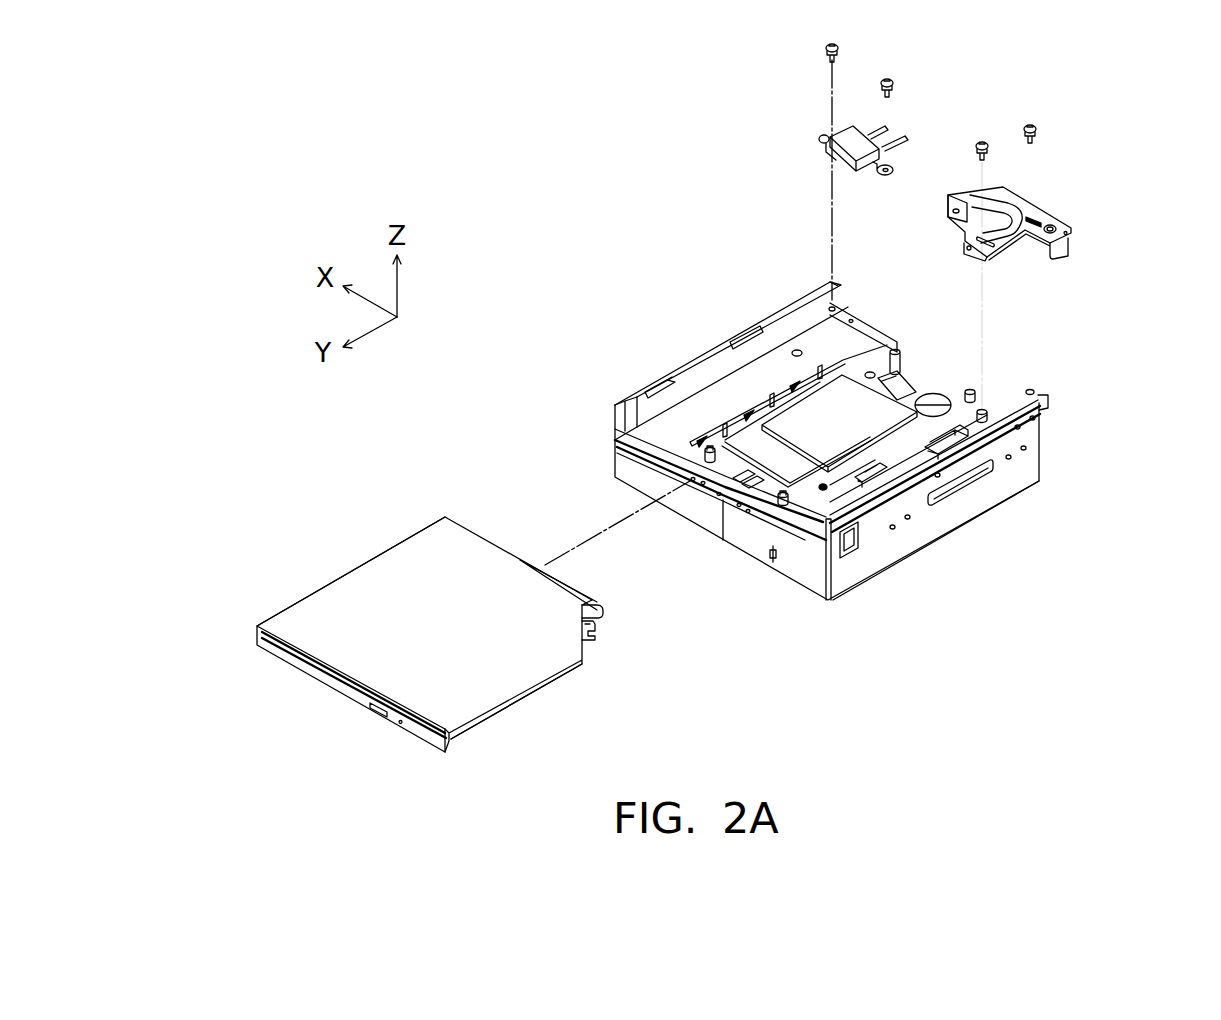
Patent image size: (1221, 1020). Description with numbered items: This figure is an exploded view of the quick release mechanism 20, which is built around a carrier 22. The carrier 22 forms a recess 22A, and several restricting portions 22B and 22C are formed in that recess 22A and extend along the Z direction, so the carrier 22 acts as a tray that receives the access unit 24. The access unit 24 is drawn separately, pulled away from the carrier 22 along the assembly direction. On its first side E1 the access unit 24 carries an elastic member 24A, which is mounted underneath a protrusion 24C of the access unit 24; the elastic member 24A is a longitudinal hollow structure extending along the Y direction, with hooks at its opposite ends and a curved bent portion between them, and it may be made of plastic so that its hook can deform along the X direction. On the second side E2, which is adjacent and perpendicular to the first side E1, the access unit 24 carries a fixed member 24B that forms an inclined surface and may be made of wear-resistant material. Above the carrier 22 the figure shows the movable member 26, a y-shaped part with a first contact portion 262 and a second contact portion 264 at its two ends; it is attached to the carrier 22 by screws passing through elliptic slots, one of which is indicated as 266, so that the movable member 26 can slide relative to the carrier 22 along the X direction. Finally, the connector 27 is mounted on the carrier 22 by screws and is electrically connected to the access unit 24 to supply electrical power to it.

The quick release mechanism 20 is at (358, 97).
The carrier 22 is at (646, 375).
The recess 22A is at (722, 387).
The restricting portion 22B is at (878, 470).
The restricting portion 22C is at (957, 425).
The access unit 24 is at (301, 667).
The elastic member 24A is at (593, 632).
The fixed member 24B is at (570, 578).
The protrusion 24C is at (512, 680).
The movable member 26 is at (1093, 235).
The first contact portion 262 is at (969, 250).
The second contact portion 264 is at (962, 202).
The slot of fixing bracket 266 is at (1040, 220).
The connector 27 is at (853, 137).
The first side E1 is at (600, 615).
The second side E2 is at (332, 600).